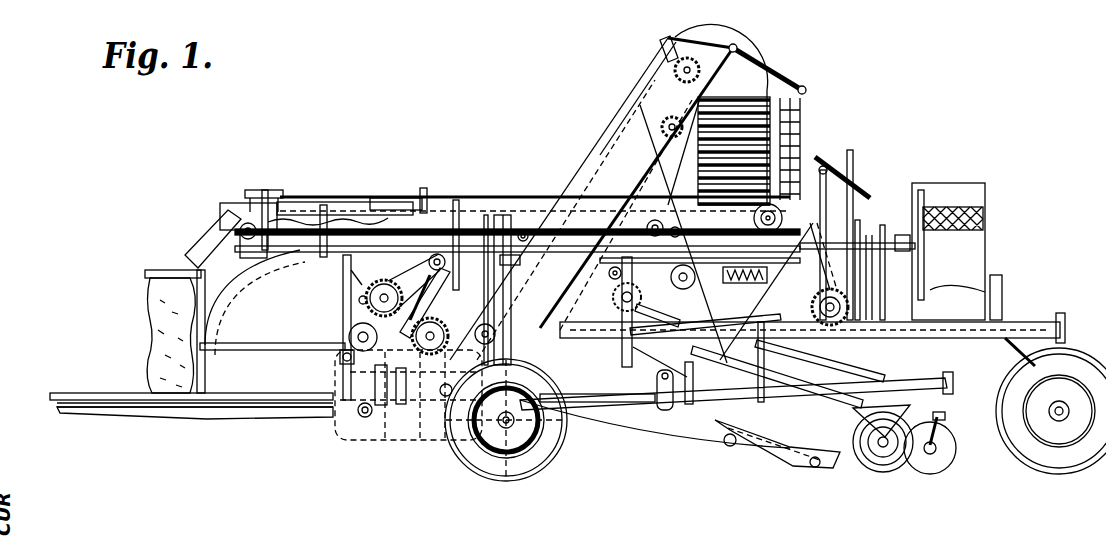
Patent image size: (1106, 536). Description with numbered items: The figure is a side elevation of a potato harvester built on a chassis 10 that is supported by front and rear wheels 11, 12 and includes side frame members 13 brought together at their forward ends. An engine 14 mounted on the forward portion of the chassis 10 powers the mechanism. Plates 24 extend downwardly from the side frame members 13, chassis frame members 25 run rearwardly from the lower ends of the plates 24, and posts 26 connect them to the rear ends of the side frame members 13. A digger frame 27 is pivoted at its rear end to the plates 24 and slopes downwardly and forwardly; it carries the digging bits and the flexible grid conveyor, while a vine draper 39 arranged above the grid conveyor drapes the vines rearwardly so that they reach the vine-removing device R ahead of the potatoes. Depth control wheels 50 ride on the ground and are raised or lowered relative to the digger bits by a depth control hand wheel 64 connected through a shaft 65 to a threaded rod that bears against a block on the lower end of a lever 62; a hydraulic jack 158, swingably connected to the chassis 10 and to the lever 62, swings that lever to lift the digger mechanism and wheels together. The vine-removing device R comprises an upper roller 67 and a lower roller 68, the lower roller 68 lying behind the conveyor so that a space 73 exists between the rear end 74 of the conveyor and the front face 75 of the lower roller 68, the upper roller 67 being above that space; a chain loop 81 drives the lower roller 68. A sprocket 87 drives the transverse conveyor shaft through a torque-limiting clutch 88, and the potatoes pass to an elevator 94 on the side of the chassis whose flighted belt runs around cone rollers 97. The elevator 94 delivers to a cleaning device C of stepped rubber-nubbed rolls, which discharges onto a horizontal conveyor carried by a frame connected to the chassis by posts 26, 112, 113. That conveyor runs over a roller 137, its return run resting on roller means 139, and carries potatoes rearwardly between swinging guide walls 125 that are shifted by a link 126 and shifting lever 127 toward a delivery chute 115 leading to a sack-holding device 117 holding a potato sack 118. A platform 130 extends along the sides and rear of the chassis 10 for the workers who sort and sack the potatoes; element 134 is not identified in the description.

The chassis 10 is at (965, 336).
The front wheel 11 is at (1055, 470).
The rear wheel 12 is at (513, 478).
The side frame member 13 is at (880, 330).
The engine 14 is at (986, 247).
The plate 24 is at (645, 385).
The chassis frame member 25 is at (296, 412).
The post 26 is at (500, 287).
The digger frame 27 is at (786, 472).
The vine draper 39 is at (900, 376).
The depth control wheel 50 is at (890, 472).
The lever 62 is at (745, 264).
The depth control hand wheel 64 is at (860, 195).
The shaft 65 is at (843, 178).
The upper roller 67 is at (362, 283).
The lower roller 68 is at (349, 336).
The space 73 is at (401, 420).
The rear end of the conveyor 74 is at (442, 425).
The front face of the lower roller 75 is at (380, 408).
The chain loop 81 is at (338, 358).
The sprocket 87 is at (280, 372).
The torque-limiting clutch 88 is at (335, 384).
The elevator 94 is at (608, 130).
The cone roller 97 is at (345, 428).
The post 112 is at (587, 193).
The post 113 is at (486, 217).
The delivery chute 115 is at (186, 248).
The sack-holding device 117 is at (168, 268).
The potato sack 118 is at (150, 336).
The swinging guide wall 125 is at (298, 203).
The link 126 is at (226, 204).
The shifting lever 127 is at (234, 200).
The platform 130 is at (72, 395).
The pin 134 is at (356, 204).
The roller 137 is at (242, 233).
The roller means 139 is at (528, 213).
The hydraulic jack 158 is at (759, 316).
The cleaning device C is at (790, 128).
The vine-removing device R is at (355, 298).